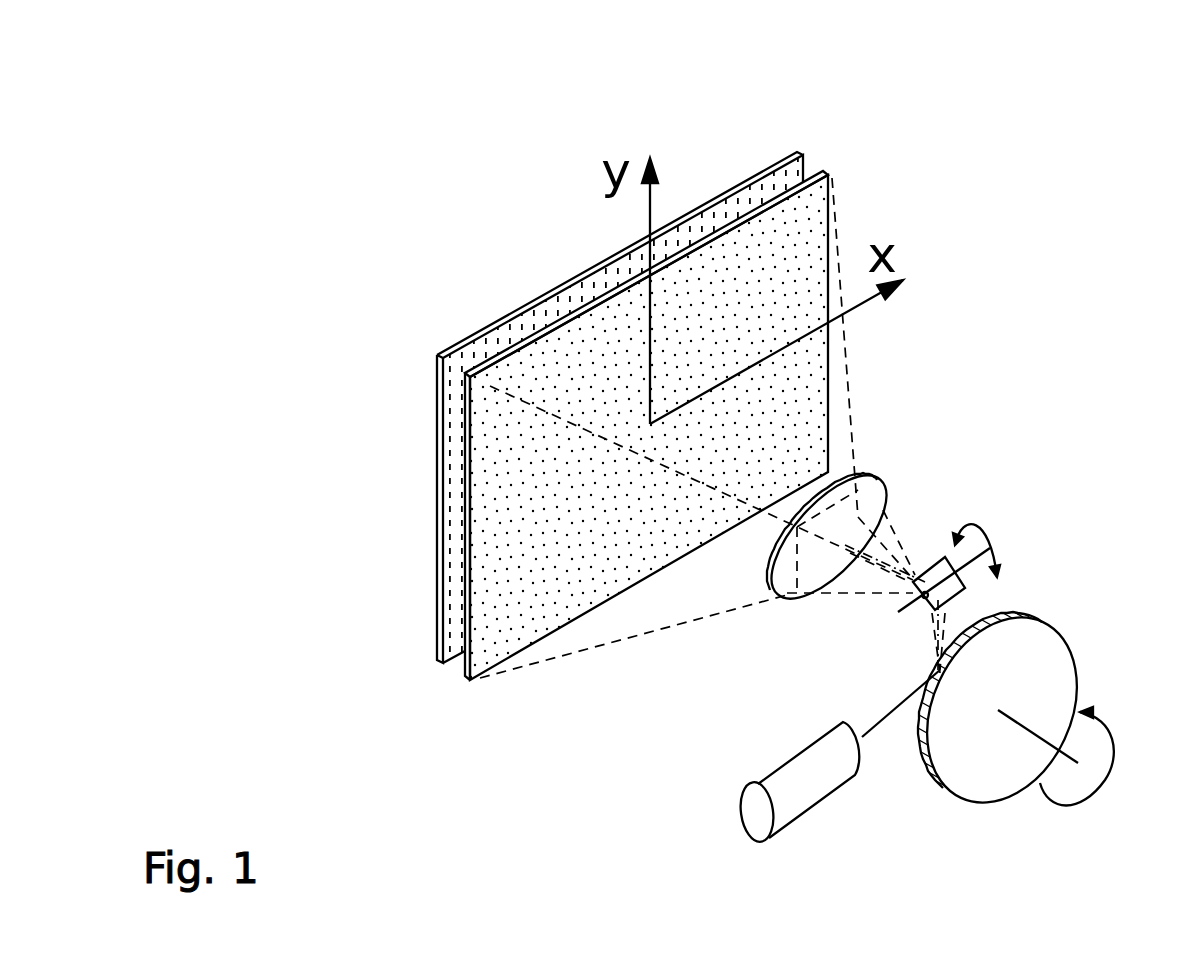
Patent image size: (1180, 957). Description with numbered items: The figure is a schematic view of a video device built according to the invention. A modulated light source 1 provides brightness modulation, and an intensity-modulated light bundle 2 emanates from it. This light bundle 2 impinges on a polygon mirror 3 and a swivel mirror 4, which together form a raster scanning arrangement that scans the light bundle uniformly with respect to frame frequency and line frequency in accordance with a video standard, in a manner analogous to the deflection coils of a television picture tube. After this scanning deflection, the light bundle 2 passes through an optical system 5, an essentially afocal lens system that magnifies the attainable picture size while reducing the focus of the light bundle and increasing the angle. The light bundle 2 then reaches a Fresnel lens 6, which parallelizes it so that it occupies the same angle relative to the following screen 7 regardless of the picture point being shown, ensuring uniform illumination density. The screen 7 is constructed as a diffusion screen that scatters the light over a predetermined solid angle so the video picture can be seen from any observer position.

The modulated light source 1 is at (783, 752).
The light bundle 2 is at (888, 708).
The polygon mirror 3 is at (1043, 658).
The swivel mirror 4 is at (985, 530).
The optical system 5 is at (873, 520).
The Fresnel lens 6 is at (820, 372).
The screen 7 is at (803, 157).